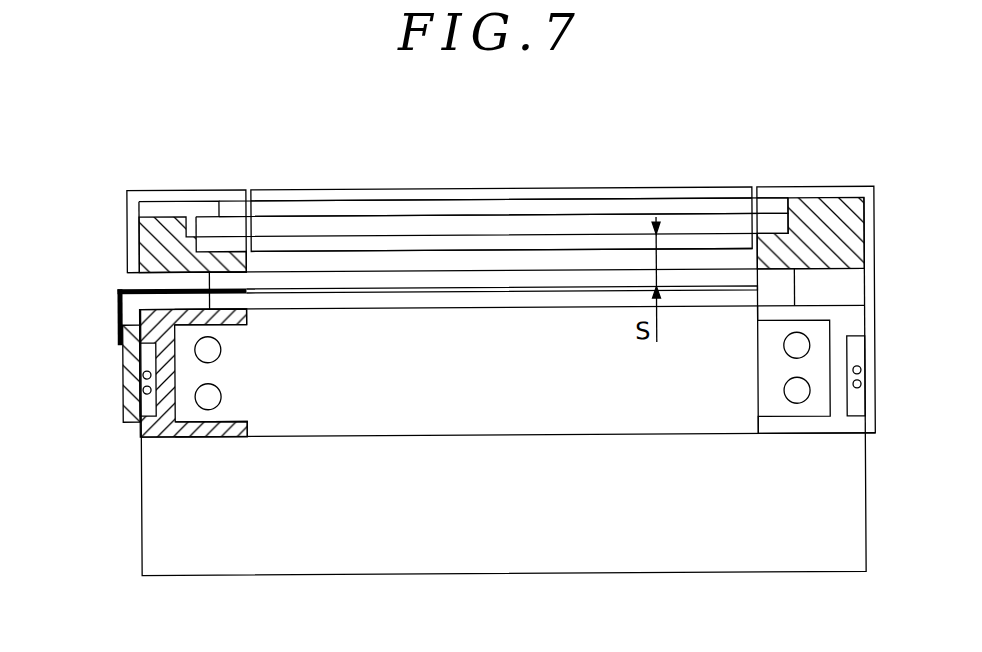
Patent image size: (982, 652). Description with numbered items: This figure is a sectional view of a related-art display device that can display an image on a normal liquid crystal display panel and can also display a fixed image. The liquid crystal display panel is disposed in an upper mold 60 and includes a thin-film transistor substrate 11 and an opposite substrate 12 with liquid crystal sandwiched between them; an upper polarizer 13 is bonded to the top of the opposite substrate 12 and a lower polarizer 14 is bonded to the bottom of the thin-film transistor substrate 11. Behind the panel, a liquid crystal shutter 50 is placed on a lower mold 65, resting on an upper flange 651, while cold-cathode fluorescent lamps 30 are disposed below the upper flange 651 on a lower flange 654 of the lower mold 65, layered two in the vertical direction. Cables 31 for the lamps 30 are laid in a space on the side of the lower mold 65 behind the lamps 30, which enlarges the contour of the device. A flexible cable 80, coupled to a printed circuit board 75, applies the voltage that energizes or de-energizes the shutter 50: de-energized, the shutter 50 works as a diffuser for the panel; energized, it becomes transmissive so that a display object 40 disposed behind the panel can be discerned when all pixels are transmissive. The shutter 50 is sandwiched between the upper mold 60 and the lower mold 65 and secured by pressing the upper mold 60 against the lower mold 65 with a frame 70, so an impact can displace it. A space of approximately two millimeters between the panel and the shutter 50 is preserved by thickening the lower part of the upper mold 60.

The thin-film transistor substrate 11 is at (425, 222).
The opposite substrate 12 is at (365, 207).
The upper polarizer 13 is at (305, 197).
The lower polarizer 14 is at (487, 239).
The cold-cathode fluorescent lamp 30 is at (207, 400).
The cable 31 is at (140, 406).
The display object 40 is at (460, 437).
The liquid crystal shutter 50 is at (582, 270).
The upper mold 60 is at (170, 213).
The lower mold 65 is at (132, 318).
The frame 70 is at (223, 198).
The printed circuit board 75 is at (123, 373).
The flexible cable 80 is at (118, 291).
The upper flange 651 is at (238, 325).
The lower flange 654 is at (247, 422).